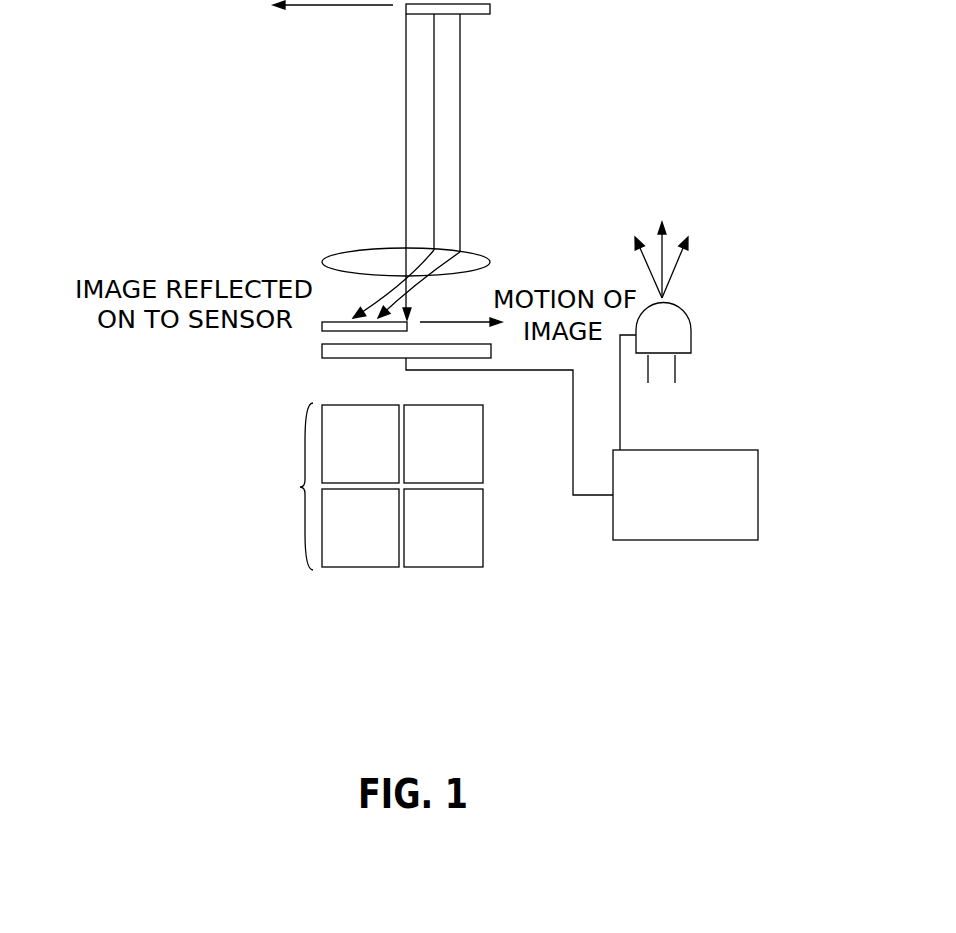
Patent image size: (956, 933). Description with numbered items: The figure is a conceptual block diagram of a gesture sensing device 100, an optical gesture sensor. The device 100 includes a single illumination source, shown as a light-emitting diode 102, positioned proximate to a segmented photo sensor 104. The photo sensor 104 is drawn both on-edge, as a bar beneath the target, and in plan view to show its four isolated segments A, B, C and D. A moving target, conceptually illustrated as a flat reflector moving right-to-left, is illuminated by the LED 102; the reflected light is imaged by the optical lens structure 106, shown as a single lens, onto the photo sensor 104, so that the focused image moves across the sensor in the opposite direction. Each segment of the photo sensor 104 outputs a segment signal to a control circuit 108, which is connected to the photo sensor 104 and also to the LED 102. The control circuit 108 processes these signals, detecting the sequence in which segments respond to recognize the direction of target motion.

The gesture sensing device 100 is at (212, 154).
The light-emitting diode 102 is at (684, 319).
The segmented photo sensor 104 is at (328, 358).
The optical lens structure 106 is at (460, 252).
The control circuit 108 is at (760, 492).